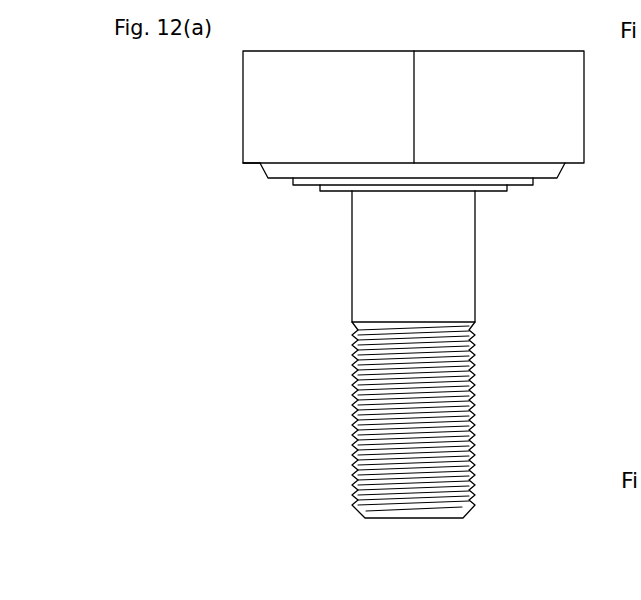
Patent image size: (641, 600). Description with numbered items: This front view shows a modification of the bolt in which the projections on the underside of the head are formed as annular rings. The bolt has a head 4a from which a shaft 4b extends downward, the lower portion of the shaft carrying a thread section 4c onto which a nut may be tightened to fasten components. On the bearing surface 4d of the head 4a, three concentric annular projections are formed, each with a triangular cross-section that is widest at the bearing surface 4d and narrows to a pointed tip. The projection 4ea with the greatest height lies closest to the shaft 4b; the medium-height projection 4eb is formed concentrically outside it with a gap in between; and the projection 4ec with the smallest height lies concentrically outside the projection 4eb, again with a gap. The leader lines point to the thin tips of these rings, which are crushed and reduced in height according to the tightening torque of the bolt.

The head 4a is at (243, 107).
The bearing surface 4d is at (243, 164).
The shaft 4b is at (352, 268).
The thread section 4c is at (475, 404).
The projection 4ea is at (425, 192).
The projection 4eb is at (535, 182).
The projection 4ec is at (562, 172).